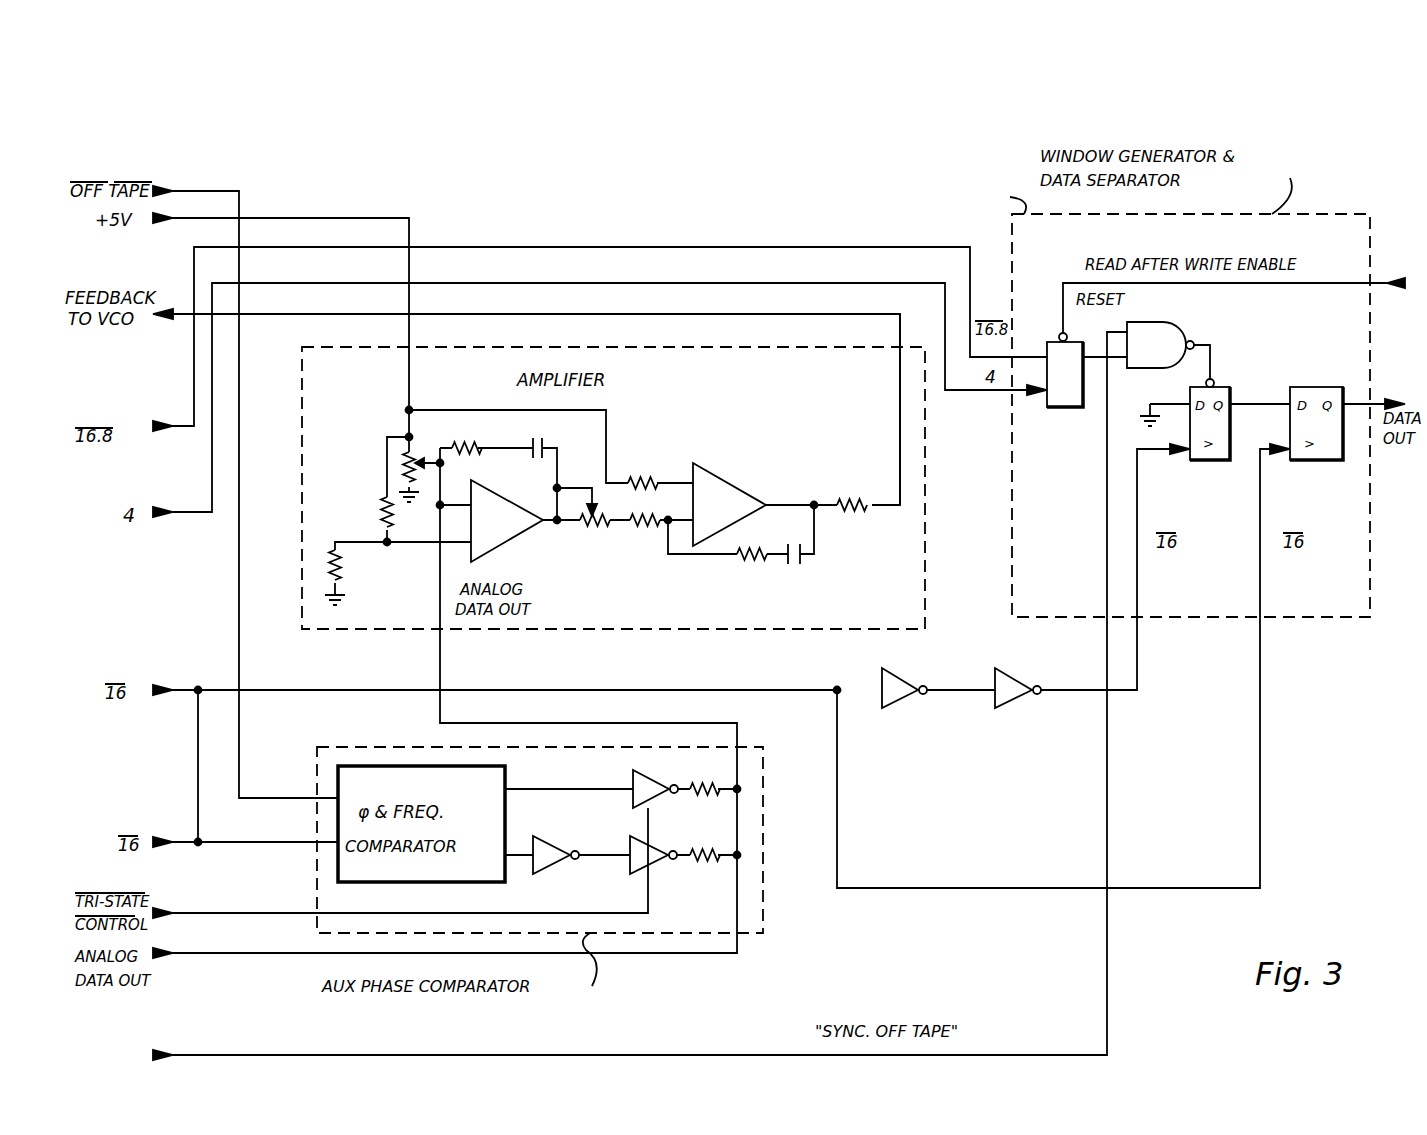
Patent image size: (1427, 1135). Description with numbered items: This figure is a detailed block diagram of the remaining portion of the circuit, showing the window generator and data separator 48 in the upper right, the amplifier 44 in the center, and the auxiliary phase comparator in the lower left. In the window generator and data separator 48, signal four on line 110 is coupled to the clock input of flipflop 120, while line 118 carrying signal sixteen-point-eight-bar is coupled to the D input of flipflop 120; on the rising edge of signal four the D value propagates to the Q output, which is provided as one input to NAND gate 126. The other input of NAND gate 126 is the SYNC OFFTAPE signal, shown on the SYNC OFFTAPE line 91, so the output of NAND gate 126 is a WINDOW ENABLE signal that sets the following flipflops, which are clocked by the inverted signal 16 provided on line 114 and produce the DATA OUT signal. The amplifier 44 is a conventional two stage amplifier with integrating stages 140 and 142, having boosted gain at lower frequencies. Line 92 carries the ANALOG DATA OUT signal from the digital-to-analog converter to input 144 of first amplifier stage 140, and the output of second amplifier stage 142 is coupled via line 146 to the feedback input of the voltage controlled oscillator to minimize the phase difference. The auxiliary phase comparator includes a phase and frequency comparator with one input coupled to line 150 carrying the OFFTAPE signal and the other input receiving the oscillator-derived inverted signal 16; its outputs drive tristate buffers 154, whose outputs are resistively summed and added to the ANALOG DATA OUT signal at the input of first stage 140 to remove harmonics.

The line 150 is at (214, 191).
The line 118 is at (188, 425).
The line 110 is at (200, 522).
The amplifier 44 is at (670, 350).
The input 144 is at (456, 500).
The first amplifier stage 140 is at (498, 521).
The second amplifier stage 142 is at (743, 513).
The line 146 is at (900, 432).
The line 92 is at (440, 598).
The window generator and data separator 48 is at (1176, 397).
The flipflop 120 is at (1058, 412).
The NAND gate 126 is at (1168, 338).
The sync off tape line 91 is at (1107, 385).
The line 114 is at (497, 675).
The clock signal 16 line 16 is at (1142, 580).
The tristate buffers 154 is at (632, 800).